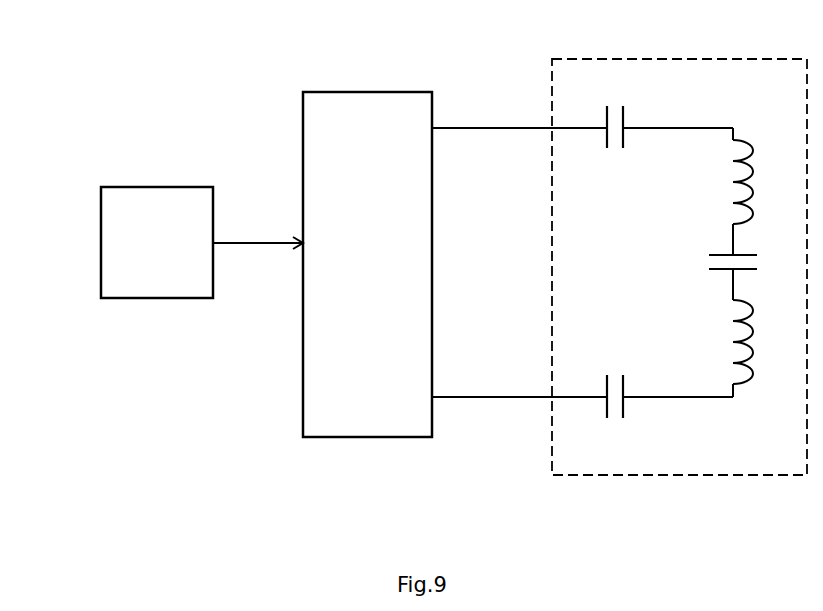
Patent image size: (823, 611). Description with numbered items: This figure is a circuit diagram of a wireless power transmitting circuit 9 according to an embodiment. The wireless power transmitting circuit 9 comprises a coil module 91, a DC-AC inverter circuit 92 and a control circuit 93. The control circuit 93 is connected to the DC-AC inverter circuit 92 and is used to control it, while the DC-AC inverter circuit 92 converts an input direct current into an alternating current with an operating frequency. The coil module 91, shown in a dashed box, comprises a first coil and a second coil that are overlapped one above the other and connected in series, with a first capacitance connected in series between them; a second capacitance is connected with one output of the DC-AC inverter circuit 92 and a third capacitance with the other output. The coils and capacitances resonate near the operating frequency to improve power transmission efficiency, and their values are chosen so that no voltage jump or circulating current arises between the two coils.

The wireless power transmitting circuit 9 is at (110, 350).
The coil module 91 is at (552, 85).
The DC-AC inverter circuit 92 is at (303, 113).
The control circuit 93 is at (212, 185).